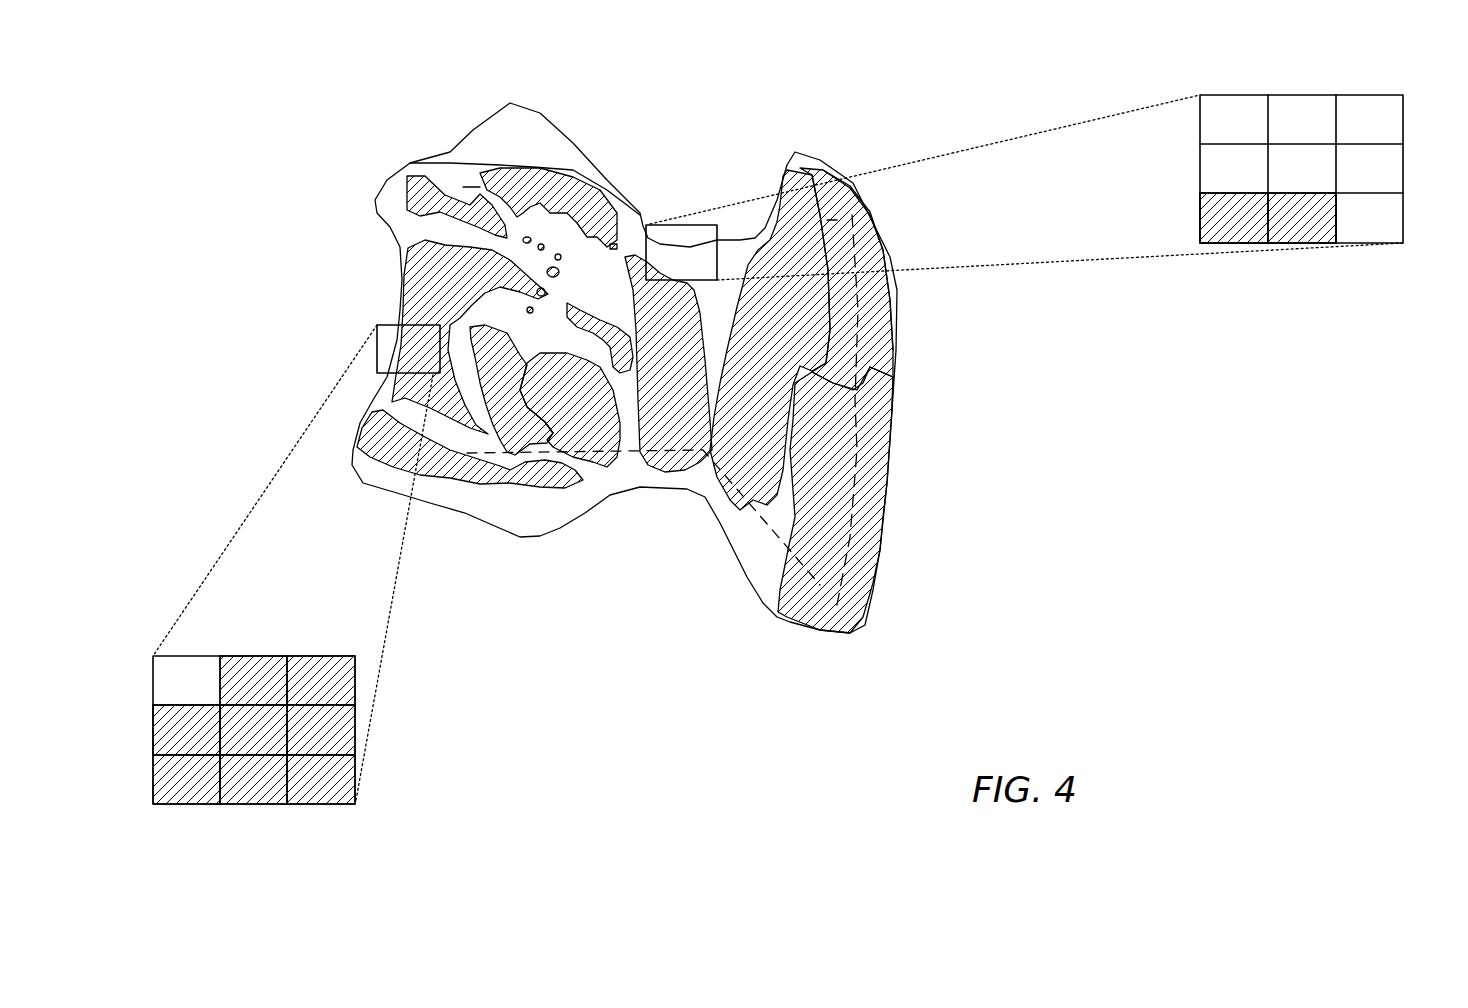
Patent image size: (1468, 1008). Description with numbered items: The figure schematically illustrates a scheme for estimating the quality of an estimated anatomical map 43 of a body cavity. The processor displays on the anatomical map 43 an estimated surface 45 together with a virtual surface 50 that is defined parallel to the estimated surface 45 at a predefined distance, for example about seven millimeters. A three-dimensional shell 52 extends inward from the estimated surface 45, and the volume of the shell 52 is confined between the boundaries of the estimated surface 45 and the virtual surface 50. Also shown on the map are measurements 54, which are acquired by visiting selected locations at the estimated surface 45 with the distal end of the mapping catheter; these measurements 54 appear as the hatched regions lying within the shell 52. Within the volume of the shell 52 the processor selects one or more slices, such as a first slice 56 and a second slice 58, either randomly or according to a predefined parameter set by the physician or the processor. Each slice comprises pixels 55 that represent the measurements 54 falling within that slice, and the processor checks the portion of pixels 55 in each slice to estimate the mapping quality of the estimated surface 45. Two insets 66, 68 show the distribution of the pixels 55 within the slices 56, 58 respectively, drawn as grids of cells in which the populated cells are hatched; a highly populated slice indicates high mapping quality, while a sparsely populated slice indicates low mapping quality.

The anatomical map 43 is at (222, 125).
The estimated surface 45 is at (553, 138).
The virtual surface 50 is at (867, 367).
The shell 52 is at (385, 455).
The measurements 54 is at (516, 389).
The pixels 55 is at (157, 722).
The slice 56 is at (377, 323).
The slice 58 is at (695, 225).
The inset 66 is at (392, 656).
The inset 68 is at (1410, 95).